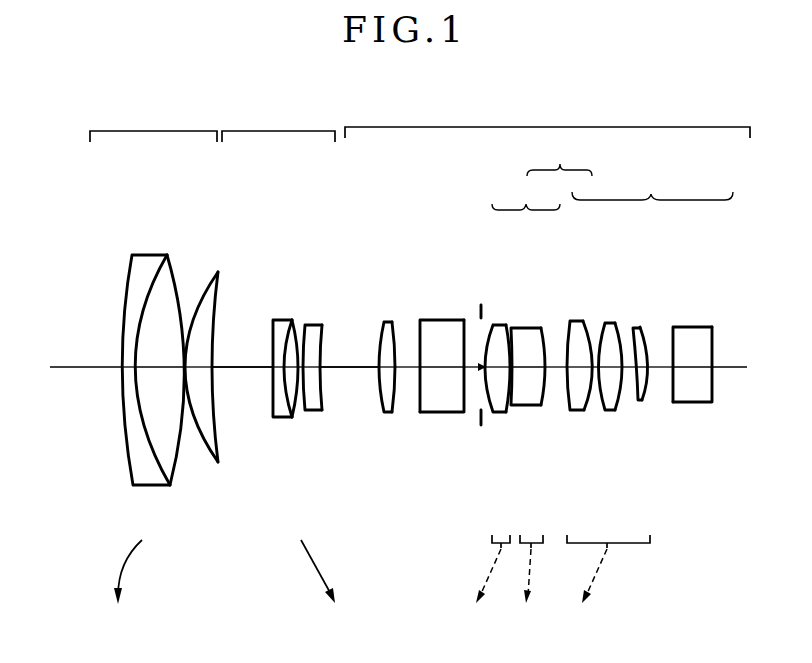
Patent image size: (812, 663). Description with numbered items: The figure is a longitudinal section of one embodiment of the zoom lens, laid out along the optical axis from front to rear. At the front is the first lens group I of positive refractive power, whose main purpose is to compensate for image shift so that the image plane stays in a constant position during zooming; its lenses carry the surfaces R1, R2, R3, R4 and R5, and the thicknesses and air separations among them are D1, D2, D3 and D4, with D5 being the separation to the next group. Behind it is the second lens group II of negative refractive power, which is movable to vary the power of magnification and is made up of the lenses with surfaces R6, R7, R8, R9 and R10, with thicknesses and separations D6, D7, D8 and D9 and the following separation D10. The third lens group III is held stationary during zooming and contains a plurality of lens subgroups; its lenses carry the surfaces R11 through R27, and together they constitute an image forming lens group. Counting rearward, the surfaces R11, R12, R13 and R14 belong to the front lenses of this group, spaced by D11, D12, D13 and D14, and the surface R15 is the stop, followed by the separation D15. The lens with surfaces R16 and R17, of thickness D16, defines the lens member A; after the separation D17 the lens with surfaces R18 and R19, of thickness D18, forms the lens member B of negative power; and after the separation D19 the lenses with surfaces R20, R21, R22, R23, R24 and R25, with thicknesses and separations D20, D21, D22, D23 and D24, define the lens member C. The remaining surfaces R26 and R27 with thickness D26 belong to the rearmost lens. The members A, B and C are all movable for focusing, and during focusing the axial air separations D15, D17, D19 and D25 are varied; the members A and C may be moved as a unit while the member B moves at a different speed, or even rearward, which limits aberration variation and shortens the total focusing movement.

The first lens group I is at (161, 131).
The second lens group II is at (282, 131).
The third lens group III is at (549, 127).
The lens member A is at (525, 204).
The lens member B is at (561, 165).
The lens member C is at (652, 194).
The lens surface R1 is at (130, 277).
The lens surface R2 is at (137, 290).
The lens surface R3 is at (169, 282).
The lens surface R4 is at (193, 295).
The lens surface R5 is at (205, 288).
The lens surface R6 is at (271, 330).
The lens surface R7 is at (283, 340).
The lens surface R8 is at (297, 340).
The lens surface R9 is at (305, 338).
The lens surface R10 is at (321, 338).
The lens surface R11 is at (379, 330).
The lens surface R12 is at (396, 330).
The lens surface R13 is at (418, 326).
The lens surface R14 is at (464, 326).
The stop R15 is at (478, 304).
The lens surface R16 is at (494, 328).
The lens surface R17 is at (508, 325).
The lens surface R18 is at (514, 328).
The lens surface R19 is at (542, 328).
The lens surface R20 is at (568, 325).
The lens surface R21 is at (588, 323).
The lens surface R22 is at (604, 325).
The lens surface R23 is at (620, 325).
The lens surface R24 is at (633, 330).
The lens surface R25 is at (647, 330).
The lens surface R26 is at (672, 345).
The lens surface R27 is at (713, 347).
The lens thickness or air separation D1 is at (137, 255).
The lens thickness or air separation D2 is at (152, 361).
The lens thickness or air separation D3 is at (183, 370).
The lens thickness or air separation D4 is at (200, 367).
The lens thickness or air separation D5 is at (235, 367).
The lens thickness or air separation D6 is at (278, 320).
The lens thickness or air separation D7 is at (283, 367).
The lens thickness or air separation D8 is at (301, 367).
The lens thickness or air separation D9 is at (316, 367).
The lens thickness or air separation D10 is at (355, 367).
The lens thickness or air separation D11 is at (388, 412).
The lens thickness or air separation D12 is at (408, 367).
The lens thickness or air separation D13 is at (440, 367).
The lens thickness or air separation D14 is at (466, 412).
The axial air separation D15 is at (484, 371).
The lens thickness or air separation D16 is at (503, 412).
The axial air separation D17 is at (522, 405).
The lens thickness or air separation D18 is at (543, 405).
The axial air separation D19 is at (556, 367).
The lens thickness or air separation D20 is at (578, 410).
The lens thickness or air separation D21 is at (596, 367).
The lens thickness or air separation D22 is at (610, 410).
The lens thickness or air separation D23 is at (627, 367).
The lens thickness or air separation D24 is at (640, 400).
The axial air separation D25 is at (660, 367).
The lens thickness or air separation D26 is at (692, 367).